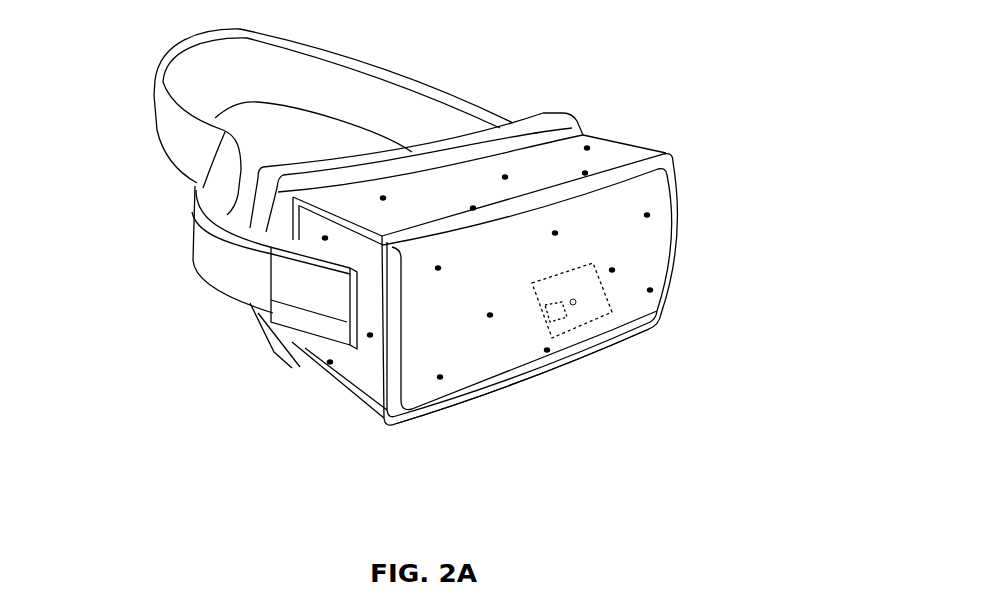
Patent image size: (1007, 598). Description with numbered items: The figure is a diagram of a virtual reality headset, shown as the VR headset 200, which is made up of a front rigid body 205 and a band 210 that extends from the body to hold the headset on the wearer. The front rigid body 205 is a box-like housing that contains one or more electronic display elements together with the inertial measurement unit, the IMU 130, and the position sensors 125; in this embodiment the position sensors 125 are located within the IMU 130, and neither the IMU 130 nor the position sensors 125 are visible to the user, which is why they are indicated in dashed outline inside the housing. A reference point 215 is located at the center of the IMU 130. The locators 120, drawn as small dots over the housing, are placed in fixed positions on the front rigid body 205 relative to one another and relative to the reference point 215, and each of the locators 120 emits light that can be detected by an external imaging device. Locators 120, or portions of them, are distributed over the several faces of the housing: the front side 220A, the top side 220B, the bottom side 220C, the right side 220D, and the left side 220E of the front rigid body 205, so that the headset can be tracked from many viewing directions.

The VR headset 200 is at (80, 31).
The front rigid body 205 is at (788, 117).
The band 210 is at (419, 82).
The front side 220A is at (429, 392).
The top side 220B is at (357, 197).
The bottom side 220C is at (327, 396).
The right side 220D is at (362, 362).
The left side 220E is at (650, 146).
The locators 120 is at (652, 289).
The position sensors 125 is at (556, 316).
The IMU 130 is at (613, 313).
The reference point 215 is at (576, 311).